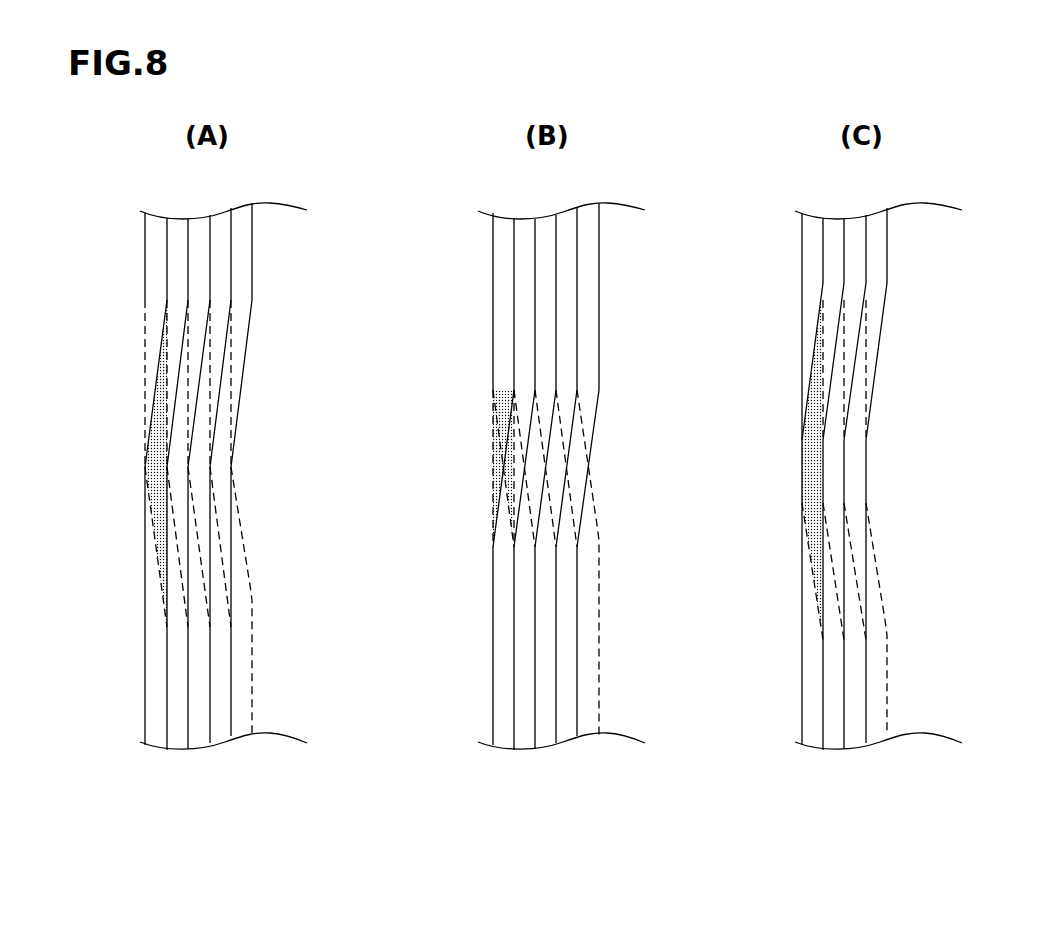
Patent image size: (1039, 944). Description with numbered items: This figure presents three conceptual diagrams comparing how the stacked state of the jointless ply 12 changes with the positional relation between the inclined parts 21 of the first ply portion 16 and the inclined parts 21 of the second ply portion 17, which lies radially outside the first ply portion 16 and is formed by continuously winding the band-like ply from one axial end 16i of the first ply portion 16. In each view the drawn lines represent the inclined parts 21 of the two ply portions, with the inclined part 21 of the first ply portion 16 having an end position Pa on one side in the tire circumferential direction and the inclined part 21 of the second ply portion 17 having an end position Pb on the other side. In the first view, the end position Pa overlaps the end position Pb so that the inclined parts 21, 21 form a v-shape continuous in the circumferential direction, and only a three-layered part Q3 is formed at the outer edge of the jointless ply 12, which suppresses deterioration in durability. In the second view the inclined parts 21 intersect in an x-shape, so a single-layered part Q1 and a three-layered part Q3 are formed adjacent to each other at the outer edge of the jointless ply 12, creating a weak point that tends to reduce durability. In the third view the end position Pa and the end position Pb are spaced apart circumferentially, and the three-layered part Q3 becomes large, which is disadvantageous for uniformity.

The jointless ply 12 is at (155, 772).
The first ply portion 16 is at (247, 592).
The one axial end of the first ply portion 16i is at (145, 637).
The second ply portion 17 is at (240, 400).
The inclined part 21 is at (568, 476).
The end position of the inclined part of the first ply portion Pa is at (140, 463).
The end position of the inclined part of the second ply portion Pb is at (140, 475).
The single-layered part Q1 is at (497, 457).
The three-layered part Q3 is at (157, 430).